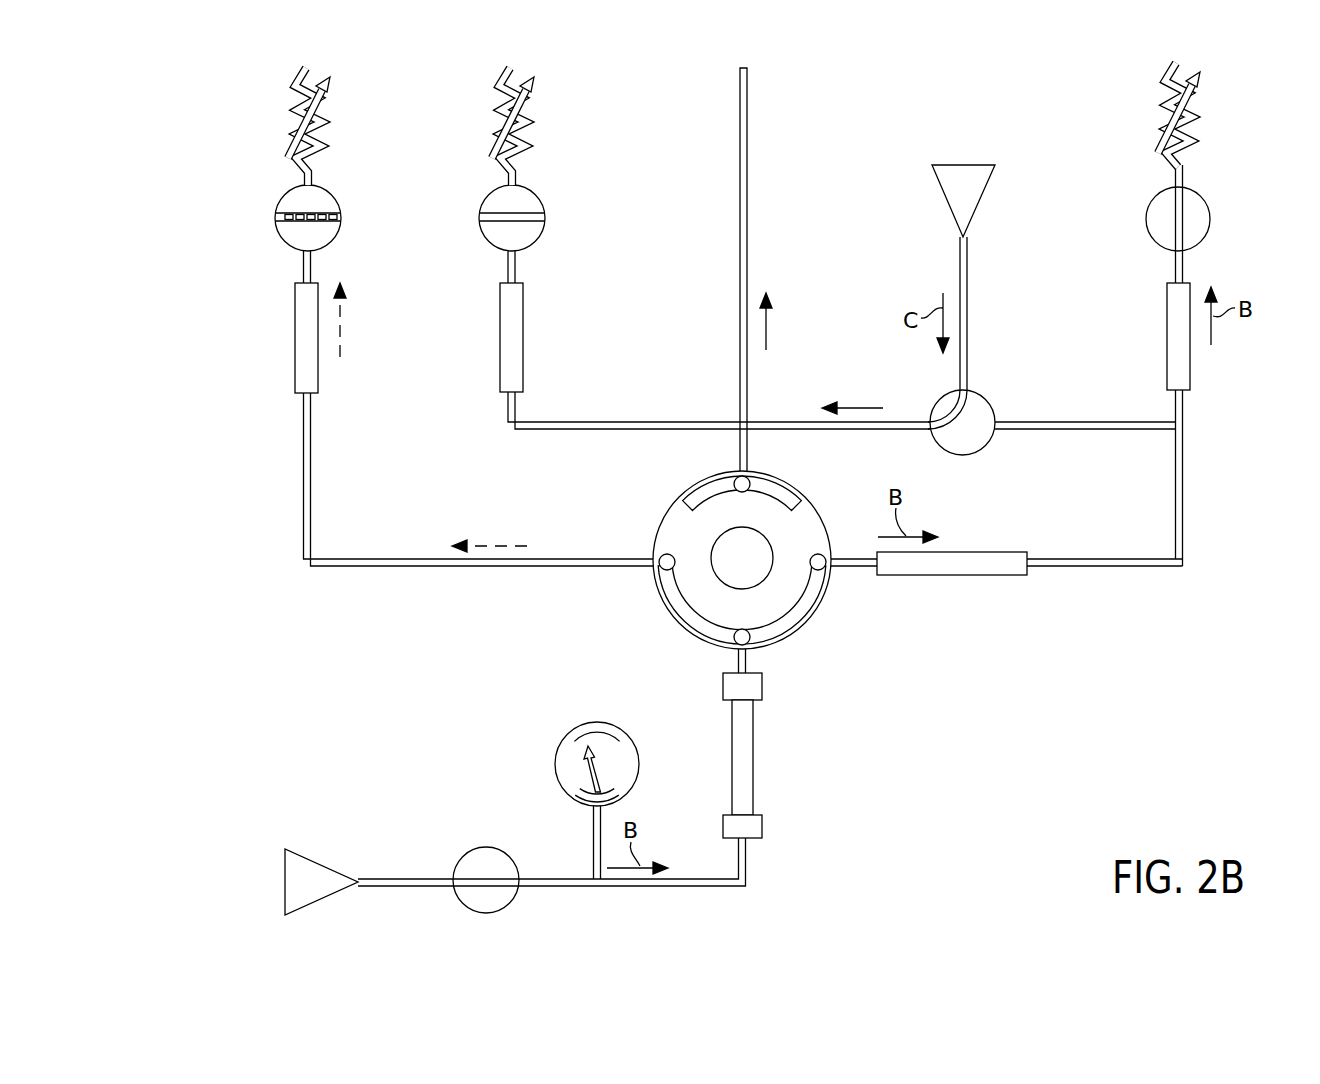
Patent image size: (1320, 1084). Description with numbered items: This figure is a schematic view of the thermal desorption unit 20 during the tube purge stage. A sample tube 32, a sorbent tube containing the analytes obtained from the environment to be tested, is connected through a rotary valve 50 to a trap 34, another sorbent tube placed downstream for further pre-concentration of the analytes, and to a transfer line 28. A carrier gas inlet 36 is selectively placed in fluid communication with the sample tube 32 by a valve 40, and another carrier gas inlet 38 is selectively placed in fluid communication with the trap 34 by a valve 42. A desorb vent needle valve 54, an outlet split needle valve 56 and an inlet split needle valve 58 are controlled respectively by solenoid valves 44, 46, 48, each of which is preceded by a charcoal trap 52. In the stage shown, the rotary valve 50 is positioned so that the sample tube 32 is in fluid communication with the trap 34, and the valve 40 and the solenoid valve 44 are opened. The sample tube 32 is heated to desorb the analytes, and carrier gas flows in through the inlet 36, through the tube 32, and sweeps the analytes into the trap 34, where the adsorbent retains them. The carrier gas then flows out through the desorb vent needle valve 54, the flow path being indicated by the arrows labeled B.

The thermal desorption unit 20 is at (187, 96).
The transfer line 28 is at (748, 150).
The sample tube 32 is at (753, 763).
The trap 34 is at (993, 552).
The carrier gas inlet 36 is at (318, 864).
The carrier gas inlet 38 is at (980, 199).
The valve 40 is at (463, 857).
The valve 42 is at (984, 398).
The solenoid valve 44 is at (1207, 204).
The solenoid valve 46 is at (544, 207).
The solenoid valve 48 is at (338, 200).
The rotary valve 50 is at (819, 514).
The charcoal trap 52 is at (295, 335).
The desorb vent needle valve 54 is at (1188, 120).
The outlet split needle valve 56 is at (522, 121).
The inlet split needle valve 58 is at (318, 121).